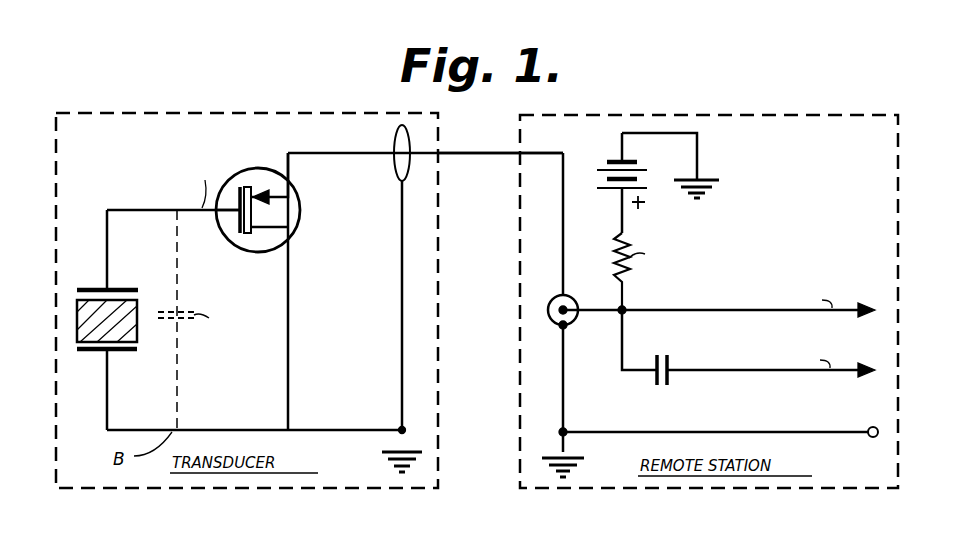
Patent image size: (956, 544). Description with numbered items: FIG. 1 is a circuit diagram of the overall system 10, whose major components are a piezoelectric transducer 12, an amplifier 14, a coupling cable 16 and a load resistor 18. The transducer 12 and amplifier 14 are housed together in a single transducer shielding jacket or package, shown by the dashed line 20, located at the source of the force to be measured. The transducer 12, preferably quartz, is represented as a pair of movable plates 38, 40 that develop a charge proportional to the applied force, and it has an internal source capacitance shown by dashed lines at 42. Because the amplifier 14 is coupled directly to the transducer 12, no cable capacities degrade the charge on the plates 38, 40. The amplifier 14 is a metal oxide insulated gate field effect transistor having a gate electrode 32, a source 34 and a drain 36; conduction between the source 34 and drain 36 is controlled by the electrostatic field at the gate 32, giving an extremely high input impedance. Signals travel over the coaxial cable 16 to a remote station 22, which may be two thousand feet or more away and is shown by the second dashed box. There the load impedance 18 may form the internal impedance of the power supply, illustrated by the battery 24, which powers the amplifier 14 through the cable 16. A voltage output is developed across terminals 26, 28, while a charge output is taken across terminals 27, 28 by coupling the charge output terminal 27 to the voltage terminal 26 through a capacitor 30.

The overall system 10 is at (463, 151).
The piezoelectric transducer 12 is at (142, 300).
The amplifier 14 is at (260, 210).
The coupling cable 16 is at (490, 156).
The load resistor 18 is at (615, 248).
The transducer shielding jacket 20 is at (248, 113).
The remote station 22 is at (763, 115).
The battery 24 is at (614, 160).
The voltage output terminal 26 is at (867, 306).
The charge output terminal 27 is at (871, 367).
The output terminal 28 is at (873, 426).
The capacitor 30 is at (648, 378).
The gate electrode 32 is at (220, 234).
The source 34 is at (262, 170).
The drain 36 is at (254, 252).
The movable plate 38 is at (80, 289).
The movable plate 40 is at (118, 352).
The source capacitance 42 is at (188, 322).